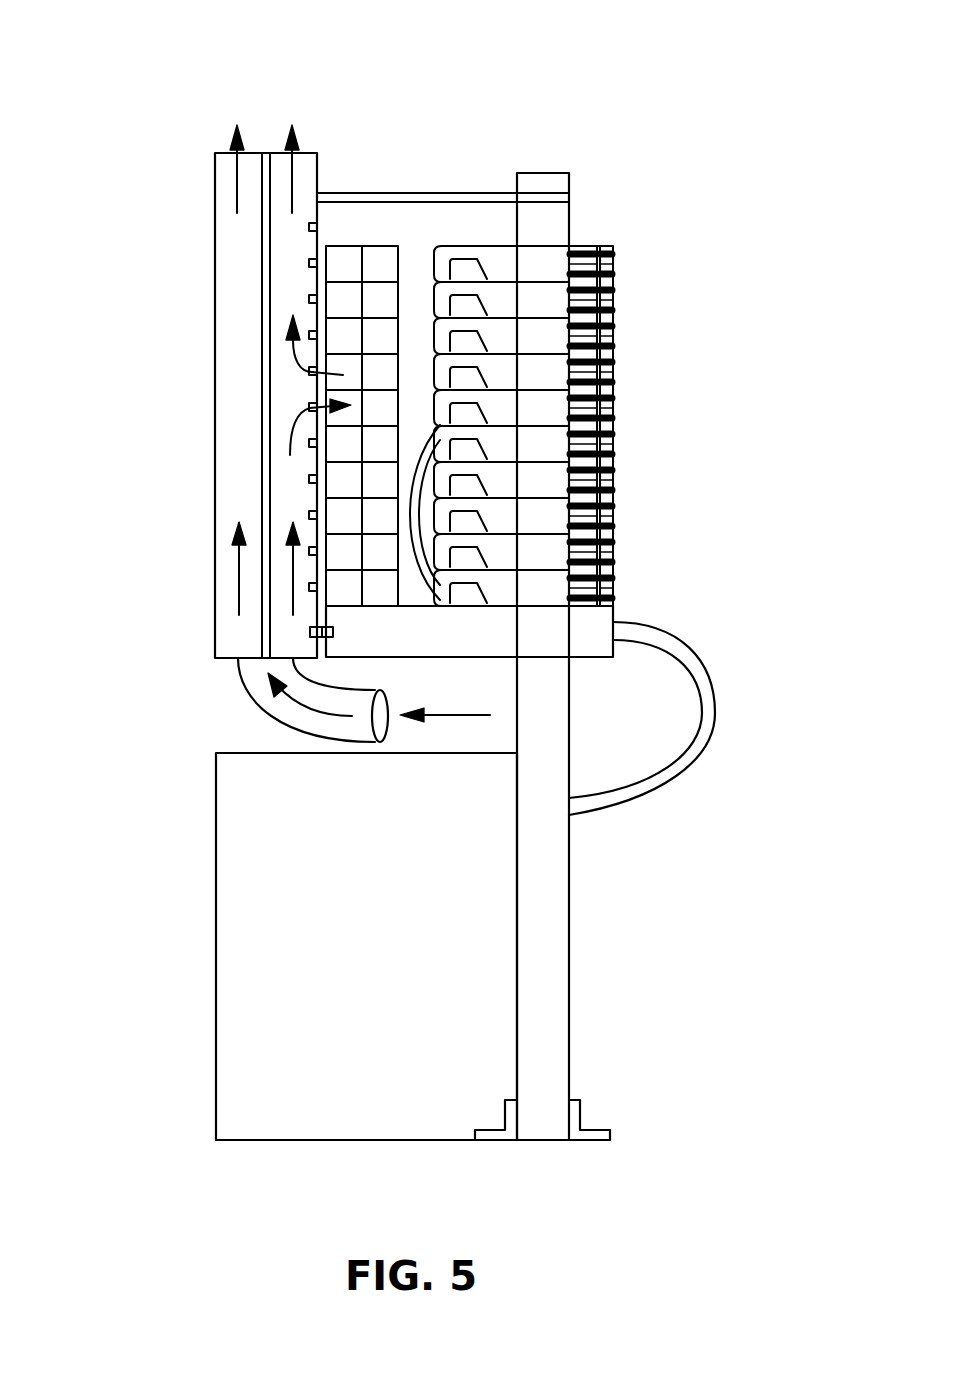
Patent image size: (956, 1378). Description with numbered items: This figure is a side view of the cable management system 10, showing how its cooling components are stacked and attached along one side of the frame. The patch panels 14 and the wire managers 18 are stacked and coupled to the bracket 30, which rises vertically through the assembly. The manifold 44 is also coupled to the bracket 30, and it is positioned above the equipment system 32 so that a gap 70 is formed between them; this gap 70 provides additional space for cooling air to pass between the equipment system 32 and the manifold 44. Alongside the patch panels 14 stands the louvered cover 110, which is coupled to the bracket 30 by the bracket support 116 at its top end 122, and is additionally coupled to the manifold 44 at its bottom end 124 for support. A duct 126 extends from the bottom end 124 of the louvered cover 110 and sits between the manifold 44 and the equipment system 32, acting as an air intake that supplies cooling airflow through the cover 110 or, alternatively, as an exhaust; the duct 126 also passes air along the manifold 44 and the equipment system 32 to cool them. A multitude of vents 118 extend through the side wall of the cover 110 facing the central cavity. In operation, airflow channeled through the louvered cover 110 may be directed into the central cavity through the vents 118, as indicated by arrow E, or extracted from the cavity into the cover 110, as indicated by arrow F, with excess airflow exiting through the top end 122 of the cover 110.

The cable management system 10 is at (158, 68).
The patch panels 14 is at (590, 247).
The wire managers 18 is at (535, 257).
The support bracket 30 is at (555, 945).
The equipment system 32 is at (233, 947).
The manifold 44 is at (600, 617).
The gap 70 is at (497, 677).
The louvered cover 110 is at (233, 495).
The bracket support 116 is at (395, 193).
The vents 118 is at (312, 297).
The top end 122 is at (222, 153).
The bottom end 124 is at (227, 660).
The duct 126 is at (286, 700).
The arrow E is at (290, 430).
The arrow F is at (312, 370).